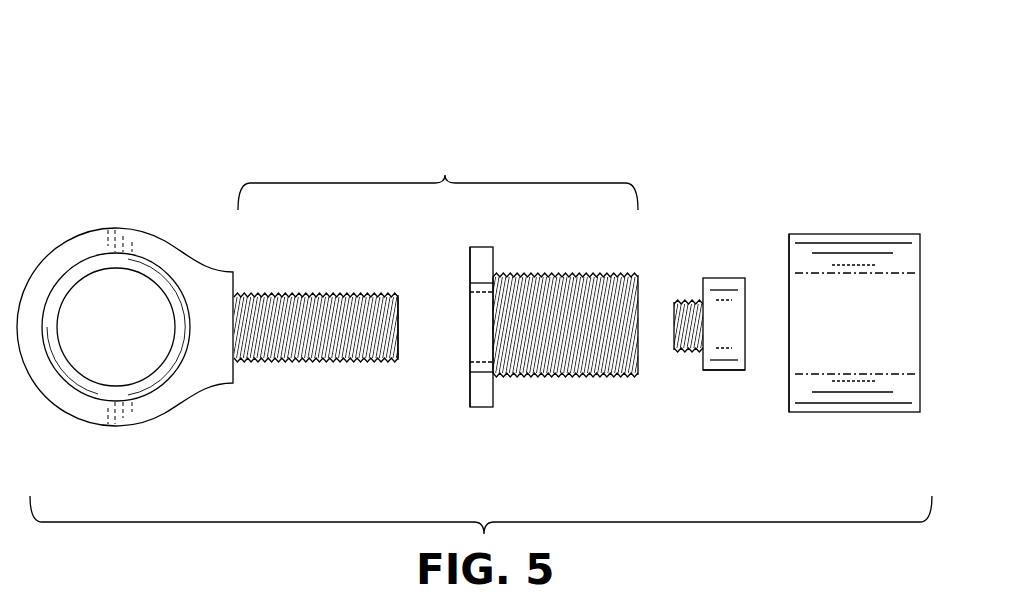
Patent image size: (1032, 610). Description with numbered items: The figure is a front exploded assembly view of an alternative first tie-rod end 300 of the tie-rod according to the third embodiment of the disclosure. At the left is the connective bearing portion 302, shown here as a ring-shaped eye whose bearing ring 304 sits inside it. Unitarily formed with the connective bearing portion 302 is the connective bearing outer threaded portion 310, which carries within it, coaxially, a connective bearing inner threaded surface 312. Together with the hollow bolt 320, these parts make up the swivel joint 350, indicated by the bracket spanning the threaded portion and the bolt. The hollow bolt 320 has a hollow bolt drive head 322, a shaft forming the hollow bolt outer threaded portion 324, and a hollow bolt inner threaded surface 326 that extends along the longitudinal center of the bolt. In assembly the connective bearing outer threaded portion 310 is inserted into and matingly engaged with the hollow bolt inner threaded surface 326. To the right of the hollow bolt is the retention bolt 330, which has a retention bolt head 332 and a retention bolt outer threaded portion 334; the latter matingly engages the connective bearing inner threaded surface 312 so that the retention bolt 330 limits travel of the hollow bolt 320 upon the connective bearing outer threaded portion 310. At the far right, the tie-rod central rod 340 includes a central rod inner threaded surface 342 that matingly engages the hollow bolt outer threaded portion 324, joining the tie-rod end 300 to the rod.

The first tie-rod end 300 is at (173, 175).
The connective bearing portion 302 is at (123, 425).
The swivel ring / bearing 304 is at (93, 253).
The connective bearing outer threaded portion 310 is at (292, 362).
The connective bearing inner threaded surface 312 is at (402, 332).
The hollow bolt 320 is at (582, 377).
The hollow bolt drive head 322 is at (480, 400).
The hollow bolt outer threaded portion 324 is at (538, 365).
The hollow bolt inner threaded surface 326 is at (470, 310).
The retention bolt 330 is at (723, 278).
The retention bolt head 332 is at (723, 355).
The retention bolt outer threaded portion 334 is at (692, 352).
The tie-rod central rod 340 is at (857, 234).
The central rod inner threaded surface 342 is at (788, 348).
The swivel joint 350 is at (438, 182).